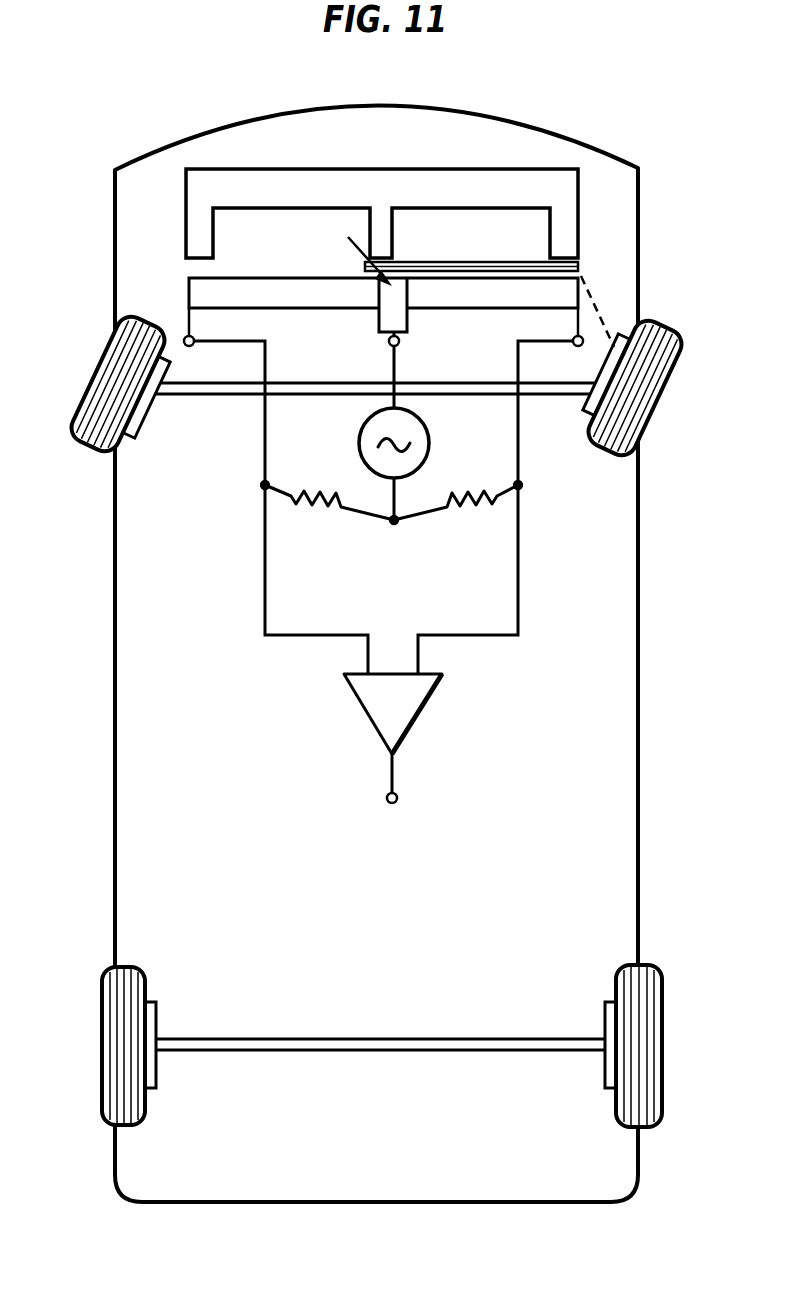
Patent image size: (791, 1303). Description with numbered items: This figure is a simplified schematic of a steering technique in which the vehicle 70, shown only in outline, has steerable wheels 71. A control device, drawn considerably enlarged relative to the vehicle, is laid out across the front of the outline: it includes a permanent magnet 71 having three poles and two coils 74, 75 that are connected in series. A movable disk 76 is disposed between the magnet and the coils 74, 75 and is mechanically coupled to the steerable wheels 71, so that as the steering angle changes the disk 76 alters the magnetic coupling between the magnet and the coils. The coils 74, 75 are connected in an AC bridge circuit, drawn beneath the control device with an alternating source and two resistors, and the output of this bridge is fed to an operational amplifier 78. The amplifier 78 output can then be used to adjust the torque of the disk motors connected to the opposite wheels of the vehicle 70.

The vehicle 70 is at (639, 575).
The steerable wheels 71 is at (330, 168).
The coil 74 is at (257, 310).
The coil 75 is at (492, 308).
The movable disk 76 is at (578, 270).
The operational amplifier 78 is at (388, 713).